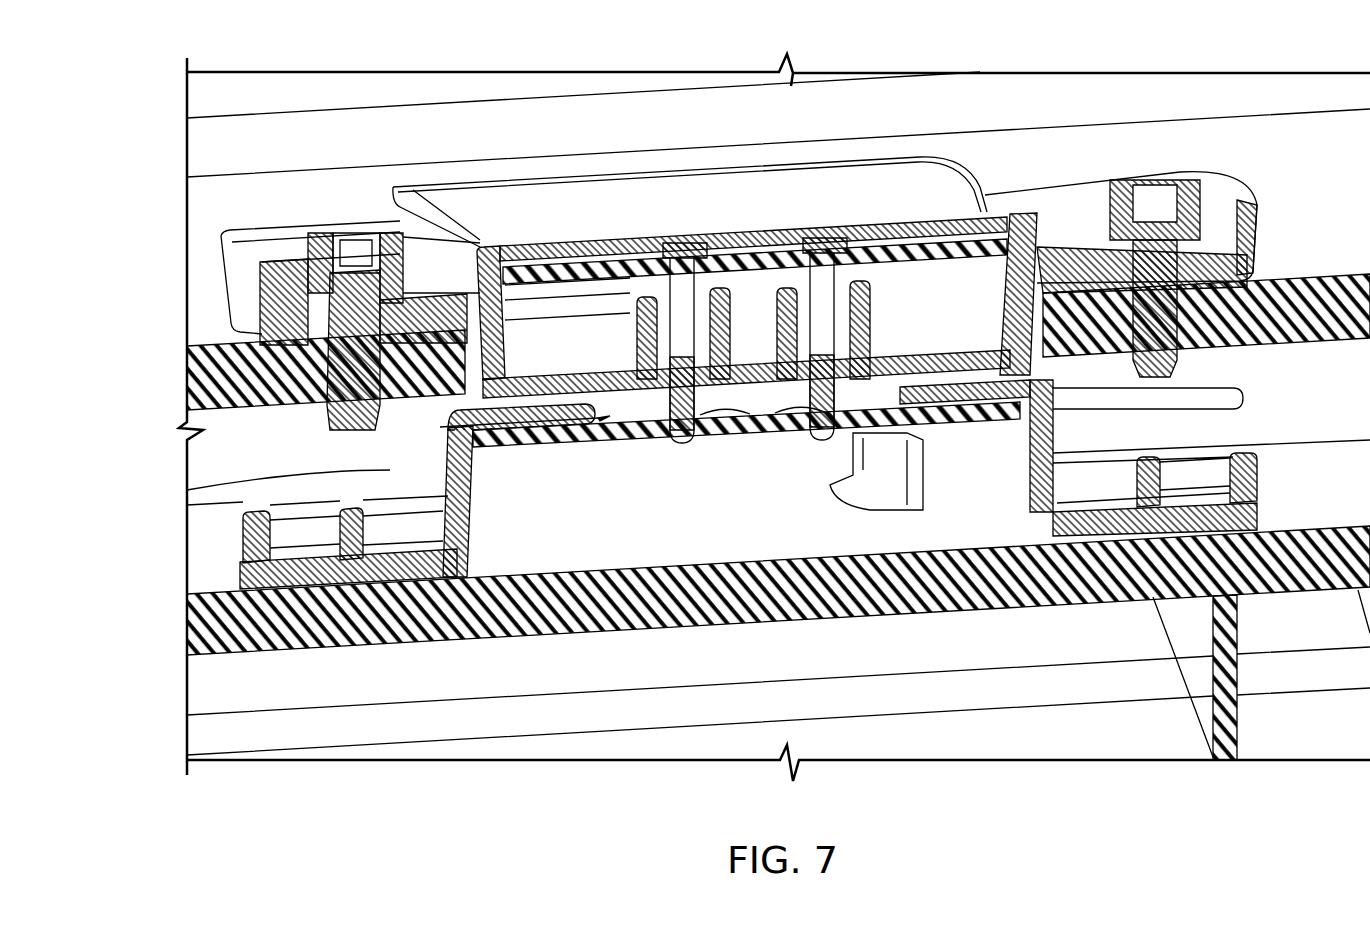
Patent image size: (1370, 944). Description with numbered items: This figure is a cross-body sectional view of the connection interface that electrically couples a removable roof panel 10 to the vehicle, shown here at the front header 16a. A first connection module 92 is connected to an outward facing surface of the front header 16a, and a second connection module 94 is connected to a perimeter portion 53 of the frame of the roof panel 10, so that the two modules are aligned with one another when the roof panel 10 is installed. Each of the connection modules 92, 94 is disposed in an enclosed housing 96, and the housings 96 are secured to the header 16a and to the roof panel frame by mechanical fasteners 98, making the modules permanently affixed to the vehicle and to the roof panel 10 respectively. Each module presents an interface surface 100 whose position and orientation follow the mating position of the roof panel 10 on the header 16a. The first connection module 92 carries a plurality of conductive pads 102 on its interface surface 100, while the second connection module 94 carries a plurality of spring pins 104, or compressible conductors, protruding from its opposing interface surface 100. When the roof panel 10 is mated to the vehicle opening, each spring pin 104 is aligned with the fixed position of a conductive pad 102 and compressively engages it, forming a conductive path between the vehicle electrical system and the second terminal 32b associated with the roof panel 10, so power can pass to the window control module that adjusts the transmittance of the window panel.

The roof panel 10 is at (203, 210).
The perimeter portion 53 is at (778, 416).
The front header 16a is at (215, 630).
The second terminal 32b is at (410, 208).
The first connection module 92 is at (390, 470).
The second connection module 94 is at (455, 195).
The enclosed housing 96 is at (885, 178).
The mechanical fastener 98 is at (230, 272).
The interface surface 100 is at (450, 438).
The conductive pad 102 is at (790, 412).
The spring pin 104 is at (825, 265).